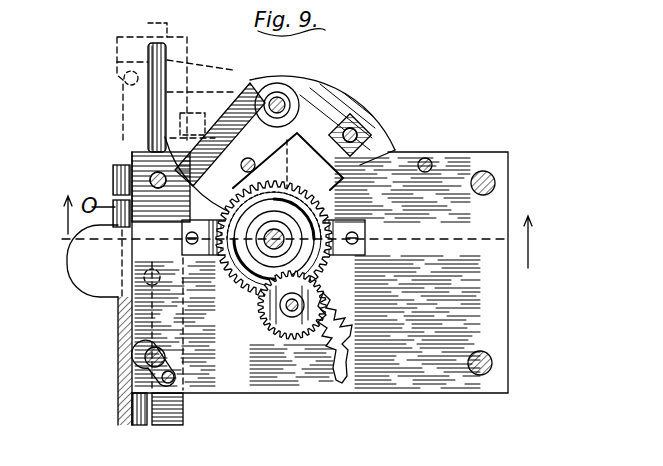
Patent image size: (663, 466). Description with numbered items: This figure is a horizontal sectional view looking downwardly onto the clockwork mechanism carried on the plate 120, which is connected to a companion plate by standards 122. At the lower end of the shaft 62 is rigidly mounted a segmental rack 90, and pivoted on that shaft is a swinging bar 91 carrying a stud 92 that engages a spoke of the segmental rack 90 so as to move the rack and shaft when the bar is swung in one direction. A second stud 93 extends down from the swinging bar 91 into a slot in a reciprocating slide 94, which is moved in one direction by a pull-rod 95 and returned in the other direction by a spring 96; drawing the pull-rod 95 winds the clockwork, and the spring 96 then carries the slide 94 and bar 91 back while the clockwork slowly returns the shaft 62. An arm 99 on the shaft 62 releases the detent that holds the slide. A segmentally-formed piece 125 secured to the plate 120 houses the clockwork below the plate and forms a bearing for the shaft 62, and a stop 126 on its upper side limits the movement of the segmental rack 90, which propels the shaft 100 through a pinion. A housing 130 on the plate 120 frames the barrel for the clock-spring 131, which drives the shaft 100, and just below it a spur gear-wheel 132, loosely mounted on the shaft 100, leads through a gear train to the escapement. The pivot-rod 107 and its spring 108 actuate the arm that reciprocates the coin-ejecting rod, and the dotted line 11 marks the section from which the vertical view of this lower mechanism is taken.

The shaft 62 is at (272, 112).
The segmental rack 90 is at (378, 152).
The swinging bar 91 is at (165, 137).
The stud 92 is at (275, 165).
The second stud 93 is at (112, 181).
The reciprocating slide 94 is at (123, 330).
The pull-rod 95 is at (152, 52).
The spring 96 is at (182, 403).
The arm 99 is at (430, 162).
The shaft 100 is at (275, 250).
The pivot-rod 107 is at (180, 372).
The spring 108 is at (150, 375).
The plate 120 is at (497, 312).
The standards 122 is at (495, 182).
The segmentally-formed piece 125 is at (340, 98).
The stop 126 is at (345, 135).
The housing 130 is at (333, 227).
The clock-spring 131 is at (300, 253).
The spur gear-wheel 132 is at (317, 272).
The dotted line 11 11 is at (56, 225).